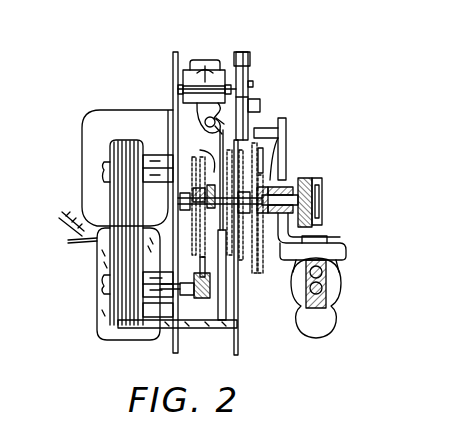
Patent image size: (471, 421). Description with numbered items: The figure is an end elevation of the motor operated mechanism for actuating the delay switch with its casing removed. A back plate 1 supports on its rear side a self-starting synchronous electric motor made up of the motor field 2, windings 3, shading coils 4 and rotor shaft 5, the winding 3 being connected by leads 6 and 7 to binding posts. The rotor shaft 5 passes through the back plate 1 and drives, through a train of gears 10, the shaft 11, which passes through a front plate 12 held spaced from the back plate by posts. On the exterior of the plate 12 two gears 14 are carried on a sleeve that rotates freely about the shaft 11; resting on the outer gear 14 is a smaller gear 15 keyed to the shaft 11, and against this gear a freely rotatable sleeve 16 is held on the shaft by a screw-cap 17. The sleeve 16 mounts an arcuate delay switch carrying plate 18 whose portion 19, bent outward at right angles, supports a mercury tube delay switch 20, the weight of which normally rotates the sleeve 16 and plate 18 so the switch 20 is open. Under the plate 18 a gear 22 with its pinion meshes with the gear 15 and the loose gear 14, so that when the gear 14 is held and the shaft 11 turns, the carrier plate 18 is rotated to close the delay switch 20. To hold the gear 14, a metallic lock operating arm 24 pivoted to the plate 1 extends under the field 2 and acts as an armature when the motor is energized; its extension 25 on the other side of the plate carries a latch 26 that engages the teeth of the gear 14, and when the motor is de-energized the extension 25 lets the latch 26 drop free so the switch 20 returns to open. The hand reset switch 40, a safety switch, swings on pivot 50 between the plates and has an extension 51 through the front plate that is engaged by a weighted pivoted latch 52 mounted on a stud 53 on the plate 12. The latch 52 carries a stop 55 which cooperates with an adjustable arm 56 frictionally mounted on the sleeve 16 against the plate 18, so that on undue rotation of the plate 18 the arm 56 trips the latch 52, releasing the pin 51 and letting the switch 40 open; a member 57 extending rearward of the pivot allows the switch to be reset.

The back plate 1 is at (173, 56).
The motor field 2 is at (126, 246).
The windings 3 is at (98, 131).
The shading coils 4 is at (105, 308).
The rotor shaft 5 is at (188, 284).
The lead 6 is at (68, 213).
The lead 7 is at (68, 241).
The train of gears 10 is at (200, 197).
The shaft 11 is at (300, 184).
The front plate 12 is at (238, 345).
The gears 14 is at (241, 258).
The smaller gear 15 is at (260, 238).
The freely rotatable sleeve 16 is at (282, 183).
The screw-cap 17 is at (323, 189).
The delay switch carrying plate 18 is at (287, 136).
The portion bent outward 19 is at (347, 250).
The mercury tube delay switch 20 is at (318, 316).
The gear 22 is at (264, 156).
The lock operating arm 24 is at (162, 333).
The extension 25 is at (225, 298).
The latch 26 is at (273, 305).
The hand reset switch 40 is at (194, 108).
The pivot 50 is at (172, 88).
The extension 51 is at (253, 84).
The weighted pivoted latch 52 is at (249, 97).
The stud 53 is at (244, 52).
The stop 55 is at (261, 104).
The adjustable arm 56 is at (299, 141).
The member 57 is at (202, 72).